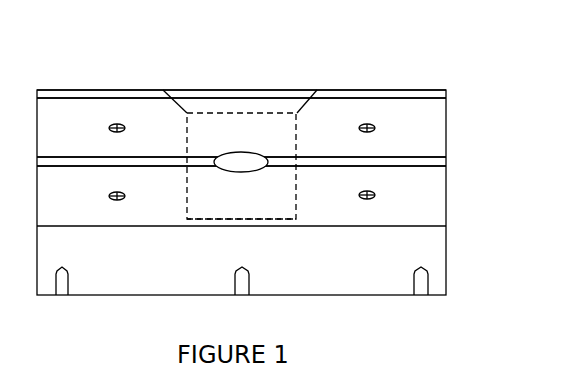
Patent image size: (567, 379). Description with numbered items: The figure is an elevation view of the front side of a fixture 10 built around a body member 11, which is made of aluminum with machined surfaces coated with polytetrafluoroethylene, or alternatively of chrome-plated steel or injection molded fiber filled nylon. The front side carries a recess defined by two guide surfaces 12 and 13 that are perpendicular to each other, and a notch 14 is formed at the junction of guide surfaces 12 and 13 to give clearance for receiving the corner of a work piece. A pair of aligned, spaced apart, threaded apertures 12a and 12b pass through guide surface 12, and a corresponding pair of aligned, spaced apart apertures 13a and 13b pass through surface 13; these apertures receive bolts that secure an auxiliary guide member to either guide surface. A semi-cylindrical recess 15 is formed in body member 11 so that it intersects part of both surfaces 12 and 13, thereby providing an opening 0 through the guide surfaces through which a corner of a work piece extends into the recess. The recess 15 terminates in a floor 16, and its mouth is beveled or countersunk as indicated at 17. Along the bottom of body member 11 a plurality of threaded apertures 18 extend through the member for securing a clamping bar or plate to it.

The fixture 10 is at (375, 70).
The body member 11 is at (241, 74).
The guide surface 12 is at (408, 108).
The threaded aperture 12a is at (102, 128).
The threaded aperture 12b is at (382, 128).
The guide surface 13 is at (408, 213).
The aperture 13a is at (102, 196).
The aperture 13b is at (382, 195).
The notch 14 is at (446, 162).
The semi-cylindrical recess 15 is at (299, 147).
The floor 16 is at (241, 203).
The bevel 17 is at (240, 79).
The opening 0 is at (238, 145).
The threaded apertures 18 is at (275, 270).